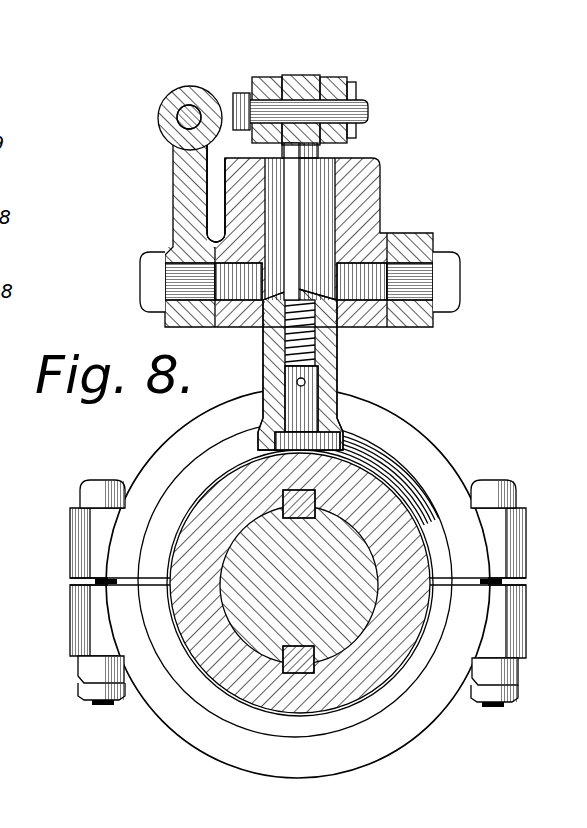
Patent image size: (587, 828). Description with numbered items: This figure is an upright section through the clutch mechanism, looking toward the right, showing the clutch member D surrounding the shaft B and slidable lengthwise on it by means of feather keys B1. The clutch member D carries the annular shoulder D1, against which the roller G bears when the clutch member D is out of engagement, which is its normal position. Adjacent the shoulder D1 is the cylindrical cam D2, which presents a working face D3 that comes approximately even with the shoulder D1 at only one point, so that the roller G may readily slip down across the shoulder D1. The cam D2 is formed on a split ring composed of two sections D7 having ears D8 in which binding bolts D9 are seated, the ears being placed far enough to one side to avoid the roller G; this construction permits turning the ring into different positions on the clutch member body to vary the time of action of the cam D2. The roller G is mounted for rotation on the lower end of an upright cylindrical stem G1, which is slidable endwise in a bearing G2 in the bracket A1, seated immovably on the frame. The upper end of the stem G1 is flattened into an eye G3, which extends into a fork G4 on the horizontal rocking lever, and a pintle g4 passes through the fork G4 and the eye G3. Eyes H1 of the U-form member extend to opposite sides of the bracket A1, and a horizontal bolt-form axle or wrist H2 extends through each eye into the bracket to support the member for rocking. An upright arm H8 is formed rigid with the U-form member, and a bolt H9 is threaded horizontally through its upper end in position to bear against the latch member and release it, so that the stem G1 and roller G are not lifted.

The bracket A1 is at (378, 162).
The roller G is at (343, 428).
The stem G1 is at (312, 222).
The bearing G2 is at (345, 200).
The eye G3 is at (300, 76).
The fork G4 is at (266, 78).
The pintle g4 is at (368, 110).
The eyes H1 is at (170, 232).
The bolt-form axle or wrist H2 is at (190, 287).
The upright arm H8 is at (172, 174).
The bolt H9 is at (184, 104).
The clutch member D is at (215, 672).
The annular shoulder D1 is at (170, 662).
The cam D2 is at (400, 742).
The working face D3 is at (430, 708).
The sections D7 is at (148, 468).
The ears D8 is at (85, 612).
The binding bolts D9 is at (90, 503).
The shaft B is at (285, 643).
The feather keys B1 is at (313, 502).